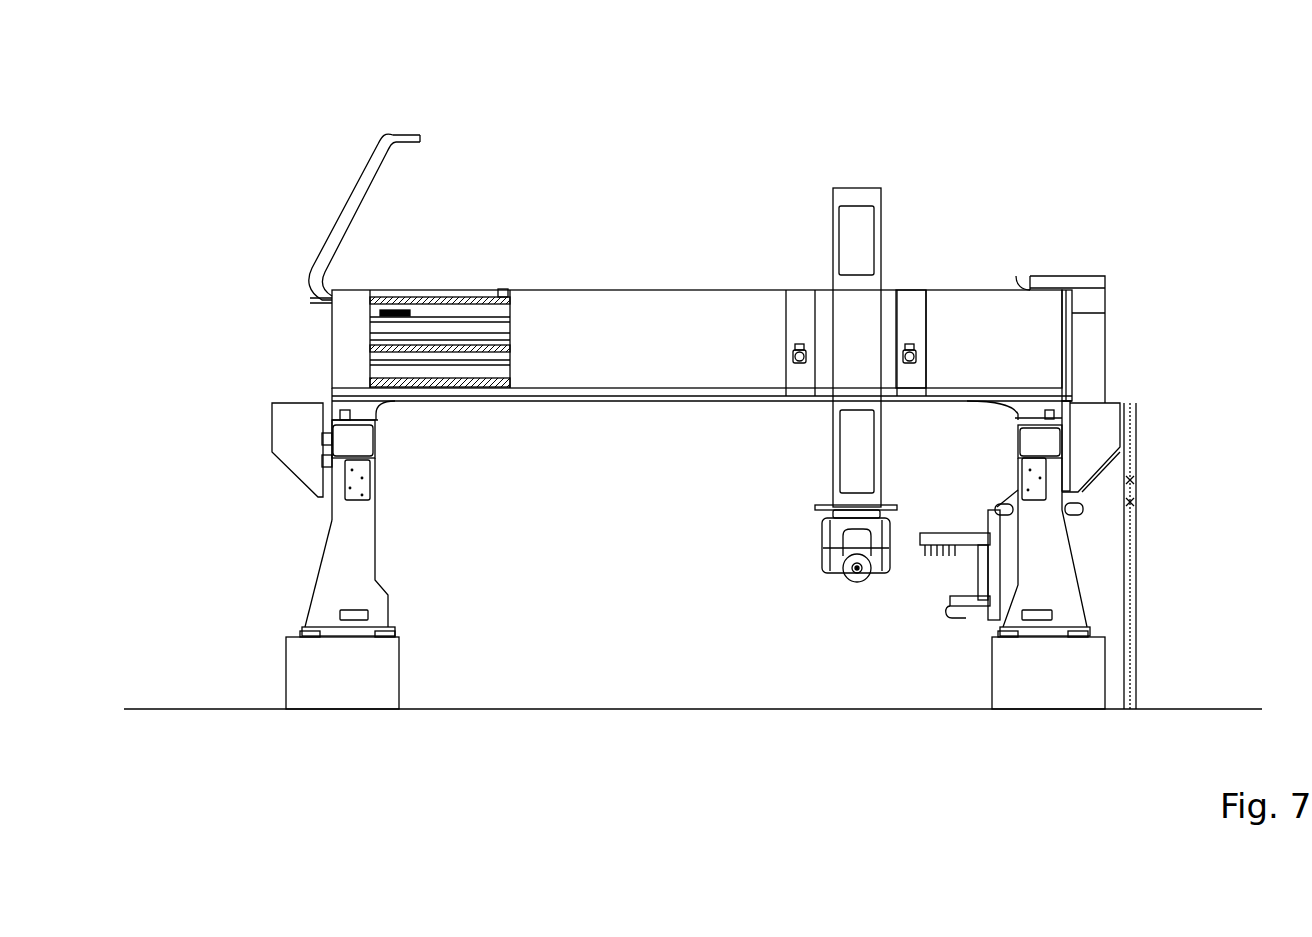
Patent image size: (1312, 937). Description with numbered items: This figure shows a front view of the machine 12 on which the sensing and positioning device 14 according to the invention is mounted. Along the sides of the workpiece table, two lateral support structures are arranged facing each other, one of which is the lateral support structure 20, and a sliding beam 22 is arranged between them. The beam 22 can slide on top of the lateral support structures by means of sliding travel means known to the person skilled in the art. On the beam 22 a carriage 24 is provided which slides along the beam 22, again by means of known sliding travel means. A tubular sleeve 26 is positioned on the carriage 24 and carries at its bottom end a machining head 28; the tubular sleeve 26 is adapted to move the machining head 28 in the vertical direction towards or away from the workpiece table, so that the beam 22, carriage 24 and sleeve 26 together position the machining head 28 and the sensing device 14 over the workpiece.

The machine 12 is at (1140, 259).
The sensing and positioning device 14 is at (862, 586).
The lateral support structure 20 is at (1077, 570).
The sliding beam 22 is at (637, 305).
The carriage 24 is at (911, 308).
The tubular sleeve 26 is at (853, 302).
The machining head 28 is at (802, 541).